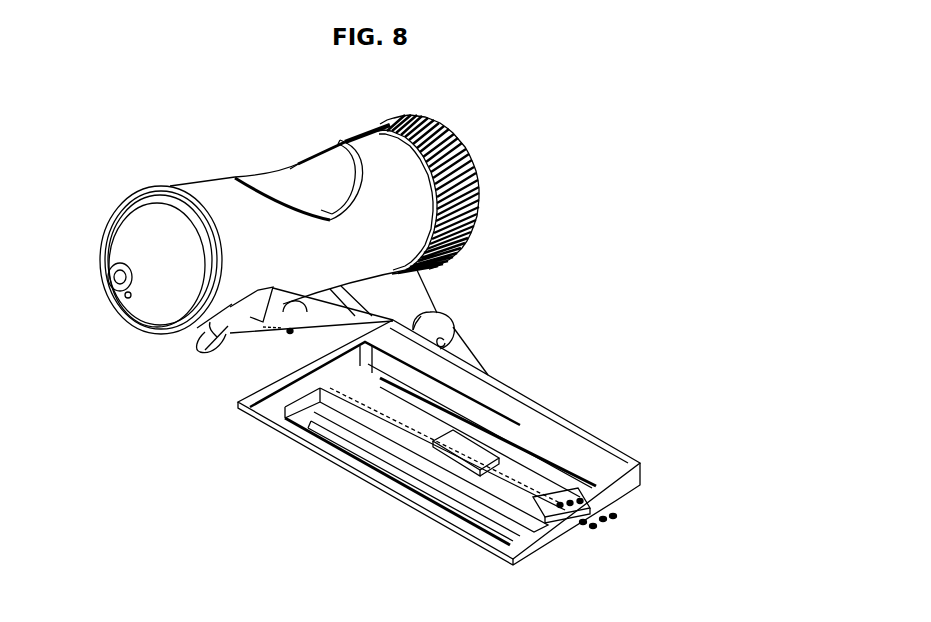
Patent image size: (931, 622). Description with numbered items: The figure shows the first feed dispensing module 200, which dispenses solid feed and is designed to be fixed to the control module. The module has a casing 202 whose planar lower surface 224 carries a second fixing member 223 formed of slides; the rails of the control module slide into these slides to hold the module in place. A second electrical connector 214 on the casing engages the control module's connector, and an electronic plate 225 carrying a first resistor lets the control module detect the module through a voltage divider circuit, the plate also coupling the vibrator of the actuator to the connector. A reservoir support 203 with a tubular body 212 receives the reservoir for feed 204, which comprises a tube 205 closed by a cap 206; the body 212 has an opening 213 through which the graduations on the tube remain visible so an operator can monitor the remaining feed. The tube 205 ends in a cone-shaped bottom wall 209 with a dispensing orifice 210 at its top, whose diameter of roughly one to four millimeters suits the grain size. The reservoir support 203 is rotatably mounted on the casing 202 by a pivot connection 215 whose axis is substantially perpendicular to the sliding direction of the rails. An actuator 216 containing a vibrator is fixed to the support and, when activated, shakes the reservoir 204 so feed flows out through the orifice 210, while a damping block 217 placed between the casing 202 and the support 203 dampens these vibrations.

The first feed dispensing module 200 is at (555, 270).
The casing 202 is at (550, 427).
The reservoir support 203 is at (387, 144).
The reservoir for feed 204 is at (293, 167).
The tube 205 is at (250, 172).
The cap 206 is at (478, 174).
The cone-shaped bottom wall 209 is at (152, 308).
The dispensing orifice 210 is at (110, 277).
The tubular body 212 is at (190, 188).
The opening 213 is at (327, 142).
The second electrical connector 214 is at (600, 530).
The pivot connection 215 is at (455, 323).
The actuator 216 is at (230, 327).
The damping block 217 is at (268, 345).
The second fixing member 223 is at (417, 380).
The planar lower surface 224 is at (397, 477).
The electronic plate 225 is at (463, 453).